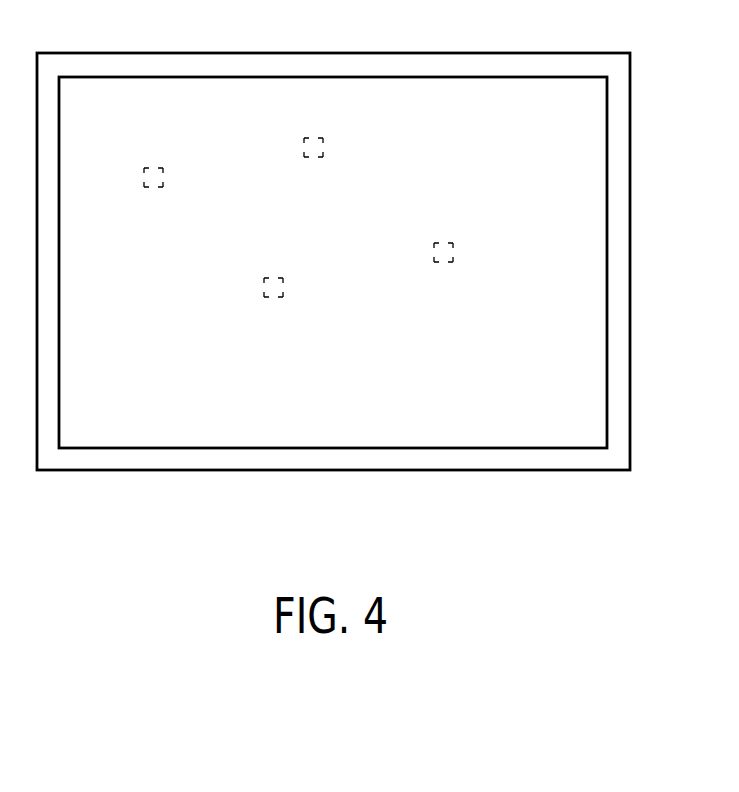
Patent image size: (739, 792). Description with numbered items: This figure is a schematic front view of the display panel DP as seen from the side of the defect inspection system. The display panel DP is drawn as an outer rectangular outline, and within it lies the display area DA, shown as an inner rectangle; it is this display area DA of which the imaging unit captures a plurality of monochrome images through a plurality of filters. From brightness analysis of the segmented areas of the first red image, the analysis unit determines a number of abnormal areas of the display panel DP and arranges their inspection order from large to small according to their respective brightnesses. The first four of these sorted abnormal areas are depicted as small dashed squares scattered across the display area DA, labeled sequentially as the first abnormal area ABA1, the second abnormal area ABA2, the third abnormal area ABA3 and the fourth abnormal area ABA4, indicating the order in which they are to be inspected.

The display panel DP is at (571, 53).
The display area DA is at (486, 120).
The first abnormal area ABA1 is at (163, 166).
The second abnormal area ABA2 is at (323, 136).
The third abnormal area ABA3 is at (283, 276).
The fourth abnormal area ABA4 is at (453, 241).